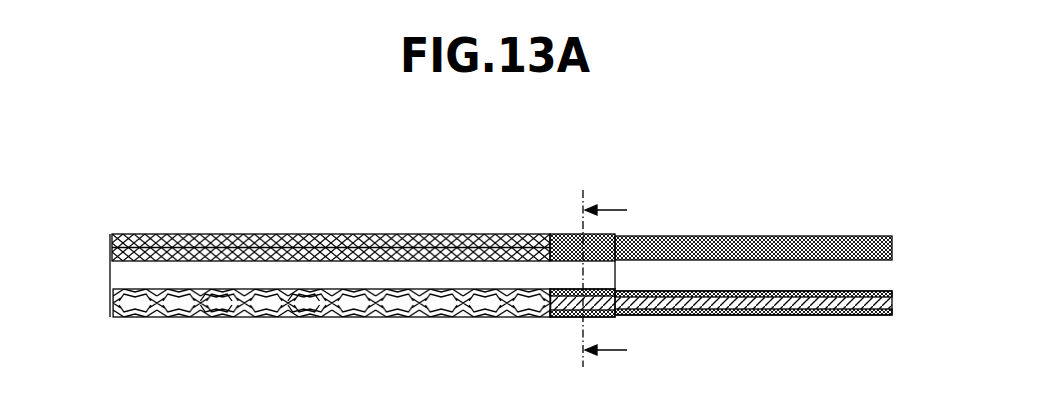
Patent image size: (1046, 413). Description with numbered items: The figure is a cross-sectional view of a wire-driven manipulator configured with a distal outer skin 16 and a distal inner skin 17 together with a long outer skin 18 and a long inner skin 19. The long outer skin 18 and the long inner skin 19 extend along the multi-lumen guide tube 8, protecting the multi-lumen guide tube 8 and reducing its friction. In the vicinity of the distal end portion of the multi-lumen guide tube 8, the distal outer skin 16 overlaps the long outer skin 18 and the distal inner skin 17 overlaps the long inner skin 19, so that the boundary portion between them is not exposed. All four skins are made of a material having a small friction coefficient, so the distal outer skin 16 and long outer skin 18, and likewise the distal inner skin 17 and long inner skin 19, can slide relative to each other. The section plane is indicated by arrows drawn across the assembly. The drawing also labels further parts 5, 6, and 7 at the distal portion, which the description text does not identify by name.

The first braided layer 5 is at (182, 238).
The distal end 6 is at (110, 320).
The second braided layer 7 is at (416, 313).
The multi-lumen guide tube 8 is at (656, 318).
The distal outer skin 16 is at (306, 313).
The distal inner skin 17 is at (214, 300).
The long outer skin 18 is at (775, 317).
The long inner skin 19 is at (716, 288).